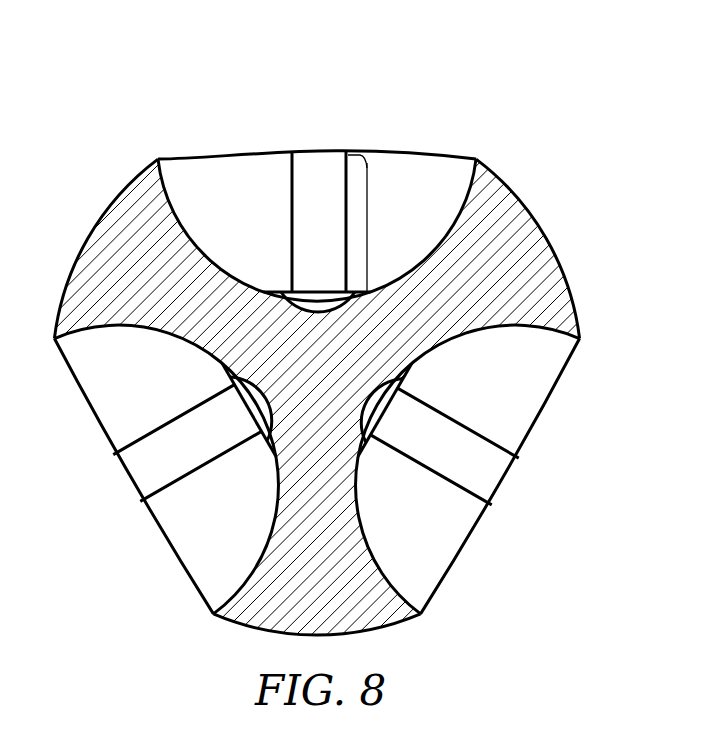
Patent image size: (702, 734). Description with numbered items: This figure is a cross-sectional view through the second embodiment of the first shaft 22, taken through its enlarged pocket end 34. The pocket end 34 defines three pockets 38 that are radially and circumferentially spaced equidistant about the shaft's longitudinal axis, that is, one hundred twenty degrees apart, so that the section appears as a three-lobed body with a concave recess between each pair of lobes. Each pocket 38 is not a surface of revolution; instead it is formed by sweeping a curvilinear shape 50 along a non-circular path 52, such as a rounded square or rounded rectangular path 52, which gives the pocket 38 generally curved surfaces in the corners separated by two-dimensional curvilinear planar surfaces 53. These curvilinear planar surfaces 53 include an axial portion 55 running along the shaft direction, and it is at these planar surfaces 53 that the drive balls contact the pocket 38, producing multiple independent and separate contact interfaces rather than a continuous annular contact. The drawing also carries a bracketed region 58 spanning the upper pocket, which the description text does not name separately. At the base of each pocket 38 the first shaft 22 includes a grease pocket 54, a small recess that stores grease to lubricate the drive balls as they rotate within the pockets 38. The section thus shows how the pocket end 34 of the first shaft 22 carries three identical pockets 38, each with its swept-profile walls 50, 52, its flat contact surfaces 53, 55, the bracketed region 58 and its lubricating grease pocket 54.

The first shaft 22 is at (546, 145).
The pocket end 34 is at (546, 236).
The pockets 38 is at (443, 228).
The curvilinear shape 50 is at (415, 233).
The non-circular path 52 is at (158, 158).
The curvilinear planar surfaces 53 is at (329, 228).
The grease pocket 54 is at (320, 310).
The axial portion 55 is at (318, 173).
The insert assembly 58 is at (163, 128).